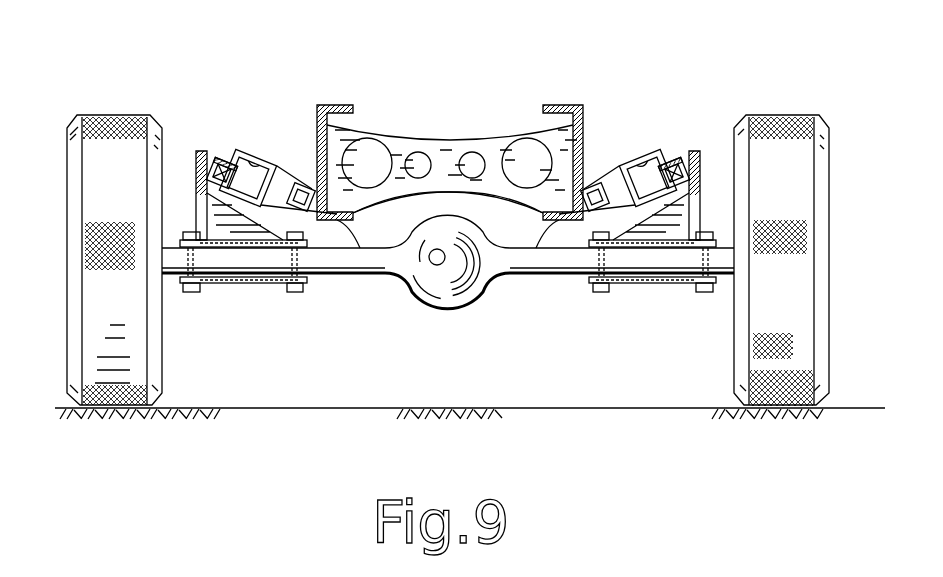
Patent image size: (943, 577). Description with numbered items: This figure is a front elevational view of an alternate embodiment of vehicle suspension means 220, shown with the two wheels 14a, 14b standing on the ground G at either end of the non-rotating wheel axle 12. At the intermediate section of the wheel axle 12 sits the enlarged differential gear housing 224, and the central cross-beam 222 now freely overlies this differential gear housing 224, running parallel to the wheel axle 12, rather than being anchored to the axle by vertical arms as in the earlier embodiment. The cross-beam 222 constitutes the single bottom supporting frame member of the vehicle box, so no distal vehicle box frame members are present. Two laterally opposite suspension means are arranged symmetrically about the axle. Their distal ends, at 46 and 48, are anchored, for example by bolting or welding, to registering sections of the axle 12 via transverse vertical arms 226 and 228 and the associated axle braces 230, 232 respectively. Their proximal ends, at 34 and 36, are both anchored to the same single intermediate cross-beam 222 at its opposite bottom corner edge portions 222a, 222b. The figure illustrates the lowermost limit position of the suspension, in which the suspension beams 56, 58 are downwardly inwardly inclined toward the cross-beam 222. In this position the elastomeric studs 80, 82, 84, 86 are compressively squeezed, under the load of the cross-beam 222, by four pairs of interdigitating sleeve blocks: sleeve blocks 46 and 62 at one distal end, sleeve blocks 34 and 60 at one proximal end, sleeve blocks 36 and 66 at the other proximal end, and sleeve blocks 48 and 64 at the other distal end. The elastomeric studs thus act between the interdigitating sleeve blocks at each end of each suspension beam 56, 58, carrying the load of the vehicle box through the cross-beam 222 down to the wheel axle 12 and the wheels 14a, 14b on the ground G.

The wheel axle 12 is at (520, 257).
The left wheel 14a is at (95, 143).
The right wheel 14b is at (793, 170).
The proximal end of suspension means 34 is at (352, 186).
The proximal end of suspension means 36 is at (560, 150).
The distal end of suspension means 46 is at (215, 152).
The distal end of suspension means 48 is at (687, 160).
The suspension beam 56 is at (277, 154).
The suspension beam 58 is at (638, 158).
The sleeve block 60 is at (303, 185).
The sleeve block 62 is at (232, 150).
The sleeve block 64 is at (667, 158).
The sleeve block 66 is at (597, 187).
The elastomeric stud 80 is at (340, 188).
The elastomeric stud 82 is at (225, 152).
The elastomeric stud 84 is at (672, 154).
The elastomeric stud 86 is at (590, 183).
The suspension means 220 is at (240, 150).
The cross-beam 222 is at (437, 150).
The bottom corner edge portion of cross-beam 222a is at (340, 276).
The bottom corner edge portion of cross-beam 222b is at (547, 267).
The differential gear housing 224 is at (430, 290).
The transverse arm 226 is at (197, 175).
The transverse arm 228 is at (703, 183).
The axle brace 230 is at (207, 287).
The axle brace 232 is at (677, 290).
The ground G is at (316, 398).